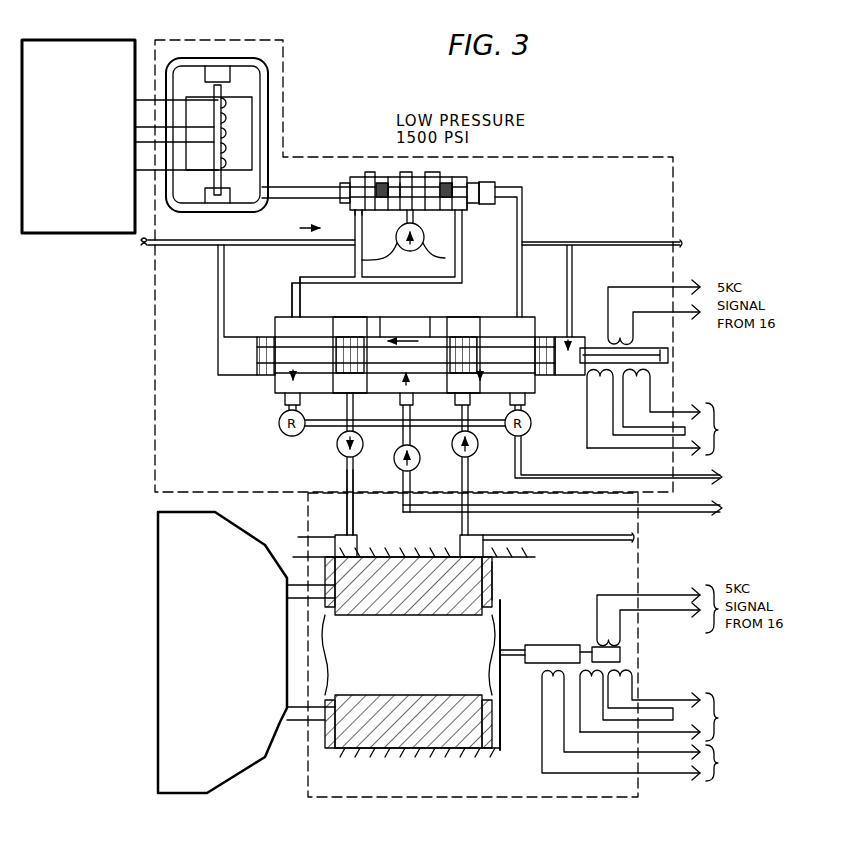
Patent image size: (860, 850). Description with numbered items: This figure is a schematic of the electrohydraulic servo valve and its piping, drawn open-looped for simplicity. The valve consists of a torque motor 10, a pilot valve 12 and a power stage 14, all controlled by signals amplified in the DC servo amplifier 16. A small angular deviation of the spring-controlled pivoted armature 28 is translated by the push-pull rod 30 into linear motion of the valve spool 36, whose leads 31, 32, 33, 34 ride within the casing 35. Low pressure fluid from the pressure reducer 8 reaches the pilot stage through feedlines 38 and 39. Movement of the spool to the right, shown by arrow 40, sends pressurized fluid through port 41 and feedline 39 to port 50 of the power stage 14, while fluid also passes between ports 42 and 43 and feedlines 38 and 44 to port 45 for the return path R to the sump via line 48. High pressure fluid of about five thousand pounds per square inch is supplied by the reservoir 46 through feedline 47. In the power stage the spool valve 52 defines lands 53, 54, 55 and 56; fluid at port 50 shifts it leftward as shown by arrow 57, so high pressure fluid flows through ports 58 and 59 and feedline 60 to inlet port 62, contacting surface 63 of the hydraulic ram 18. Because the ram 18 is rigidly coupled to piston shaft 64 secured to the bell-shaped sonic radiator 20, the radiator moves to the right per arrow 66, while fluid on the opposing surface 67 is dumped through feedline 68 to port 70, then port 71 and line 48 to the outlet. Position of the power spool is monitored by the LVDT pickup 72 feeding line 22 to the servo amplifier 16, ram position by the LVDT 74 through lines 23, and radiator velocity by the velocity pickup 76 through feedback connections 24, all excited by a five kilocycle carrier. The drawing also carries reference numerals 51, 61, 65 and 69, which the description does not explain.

The pressure reducer 8 is at (420, 246).
The torque motor 10 is at (270, 45).
The pilot valve 12 is at (498, 189).
The power stage 14 is at (528, 300).
The DC servo amplifier 16 is at (62, 233).
The hydraulic ram 18 is at (448, 662).
The sonic radiator 20 is at (150, 656).
The electrical connection line 22 is at (666, 412).
The lines 23 is at (663, 705).
The feedback connections 24 is at (644, 726).
The spring-controlled pivoted armature 28 is at (222, 135).
The push-pull rod 30 is at (292, 190).
The lead 31 is at (345, 183).
The lead 32 is at (382, 183).
The lead 33 is at (447, 185).
The lead 34 is at (482, 190).
The casing 35 is at (460, 186).
The valve spool 36 is at (395, 178).
The feedline 38 is at (270, 246).
The feedline 39 is at (588, 242).
The arrow 40 is at (295, 213).
The port 41 is at (465, 207).
The port 42 is at (354, 212).
The port 43 is at (408, 250).
The feedline 44 is at (362, 256).
The port 45 is at (290, 310).
The reservoir 46 is at (418, 462).
The feedline 47 is at (548, 510).
The line 48 is at (535, 475).
The port 50 is at (578, 338).
The spool land 51 is at (440, 328).
The spool valve 52 is at (390, 328).
The land 53 is at (262, 370).
The land 54 is at (338, 330).
The land 55 is at (455, 398).
The land 56 is at (538, 376).
The arrow 57 is at (405, 328).
The port 58 is at (400, 396).
The port 59 is at (322, 399).
The feedline 60 is at (347, 478).
The flow meter 61 is at (338, 450).
The inlet port 62 is at (298, 537).
The surface 63 is at (330, 585).
The piston shaft 64 is at (292, 715).
The radiator face 65 is at (158, 580).
The arrow 66 is at (385, 775).
The opposing surface 67 is at (492, 575).
The feedline 68 is at (478, 518).
The flow meter 69 is at (474, 452).
The port 70 is at (480, 393).
The port 71 is at (532, 395).
The LVDT pickup 72 is at (668, 360).
The LVDT 74 is at (622, 655).
The velocity pickup 76 is at (548, 645).